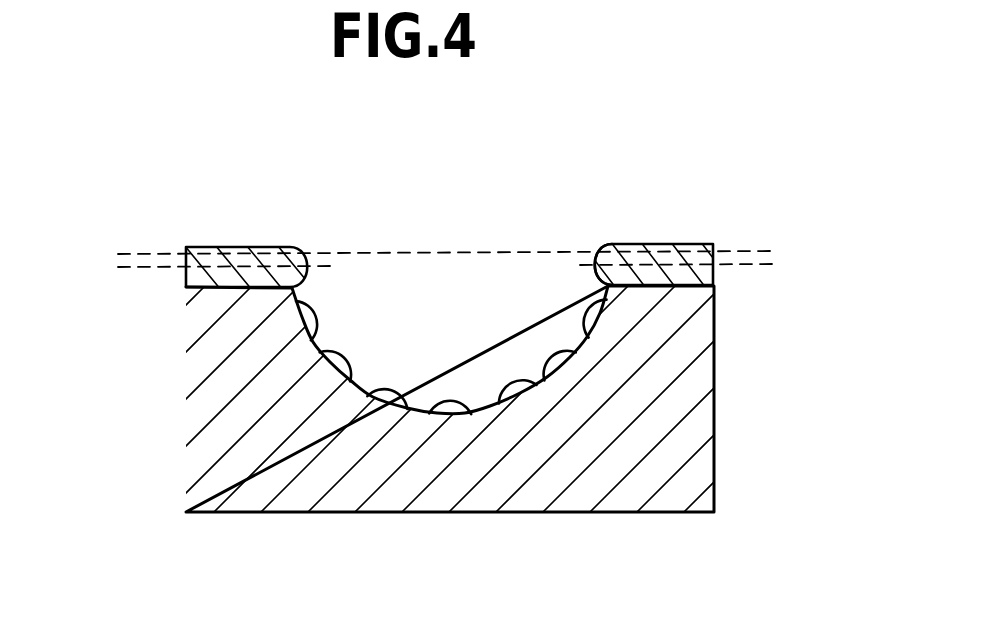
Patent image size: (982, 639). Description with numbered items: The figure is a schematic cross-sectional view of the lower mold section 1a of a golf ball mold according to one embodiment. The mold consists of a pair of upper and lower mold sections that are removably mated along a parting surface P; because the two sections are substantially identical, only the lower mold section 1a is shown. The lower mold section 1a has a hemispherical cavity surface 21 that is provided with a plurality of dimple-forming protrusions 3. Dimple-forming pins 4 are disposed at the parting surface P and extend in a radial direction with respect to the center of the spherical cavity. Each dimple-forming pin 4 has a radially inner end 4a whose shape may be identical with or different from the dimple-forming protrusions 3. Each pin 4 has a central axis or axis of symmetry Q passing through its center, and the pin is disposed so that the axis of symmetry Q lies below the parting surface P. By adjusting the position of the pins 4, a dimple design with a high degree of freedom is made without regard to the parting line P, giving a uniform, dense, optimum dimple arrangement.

The lower mold section 1a is at (700, 374).
The hemispherical cavity surface 21 is at (328, 323).
The dimple-forming protrusions 3 is at (456, 400).
The dimple-forming pin 4 is at (680, 245).
The radially inner end 4a is at (613, 247).
The parting surface P is at (548, 252).
The axis of symmetry Q is at (161, 268).